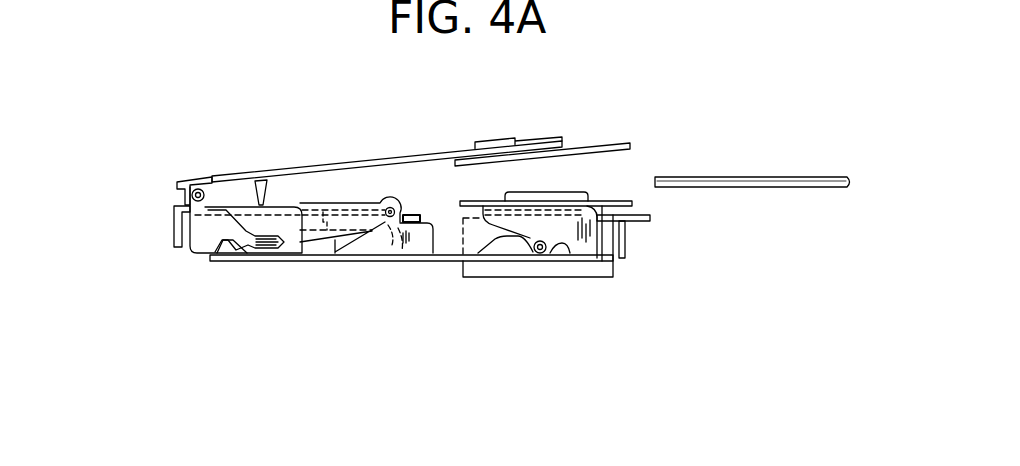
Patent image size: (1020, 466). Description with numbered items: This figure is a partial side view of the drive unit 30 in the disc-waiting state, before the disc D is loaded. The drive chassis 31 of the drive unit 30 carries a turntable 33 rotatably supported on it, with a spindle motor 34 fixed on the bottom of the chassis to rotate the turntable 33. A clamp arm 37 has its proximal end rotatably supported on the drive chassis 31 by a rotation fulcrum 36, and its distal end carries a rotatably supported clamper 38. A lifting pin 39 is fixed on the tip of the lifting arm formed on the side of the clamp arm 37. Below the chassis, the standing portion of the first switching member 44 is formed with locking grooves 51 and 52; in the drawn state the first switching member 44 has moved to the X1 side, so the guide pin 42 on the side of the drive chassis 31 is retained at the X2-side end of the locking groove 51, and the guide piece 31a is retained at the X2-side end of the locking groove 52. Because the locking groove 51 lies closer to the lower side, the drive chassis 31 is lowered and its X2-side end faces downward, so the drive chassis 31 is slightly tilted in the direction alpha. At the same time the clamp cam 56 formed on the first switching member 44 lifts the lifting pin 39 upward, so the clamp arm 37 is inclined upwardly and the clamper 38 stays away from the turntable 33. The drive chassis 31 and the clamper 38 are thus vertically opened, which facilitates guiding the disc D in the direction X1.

The drive unit 30 is at (647, 257).
The drive chassis 31 is at (176, 233).
The guide piece 31a is at (266, 178).
The turntable 33 is at (655, 212).
The spindle motor 34 is at (598, 272).
The rotation fulcrum 36 is at (186, 194).
The clamp arm 37 is at (328, 165).
The clamper 38 is at (608, 146).
The lifting pin 39 is at (396, 207).
The guide pin 42 is at (540, 254).
The first switching member 44 is at (375, 272).
The locking groove 51 is at (558, 250).
The locking groove 52 is at (262, 262).
The clamp cam 56 is at (412, 214).
The disc D is at (762, 178).